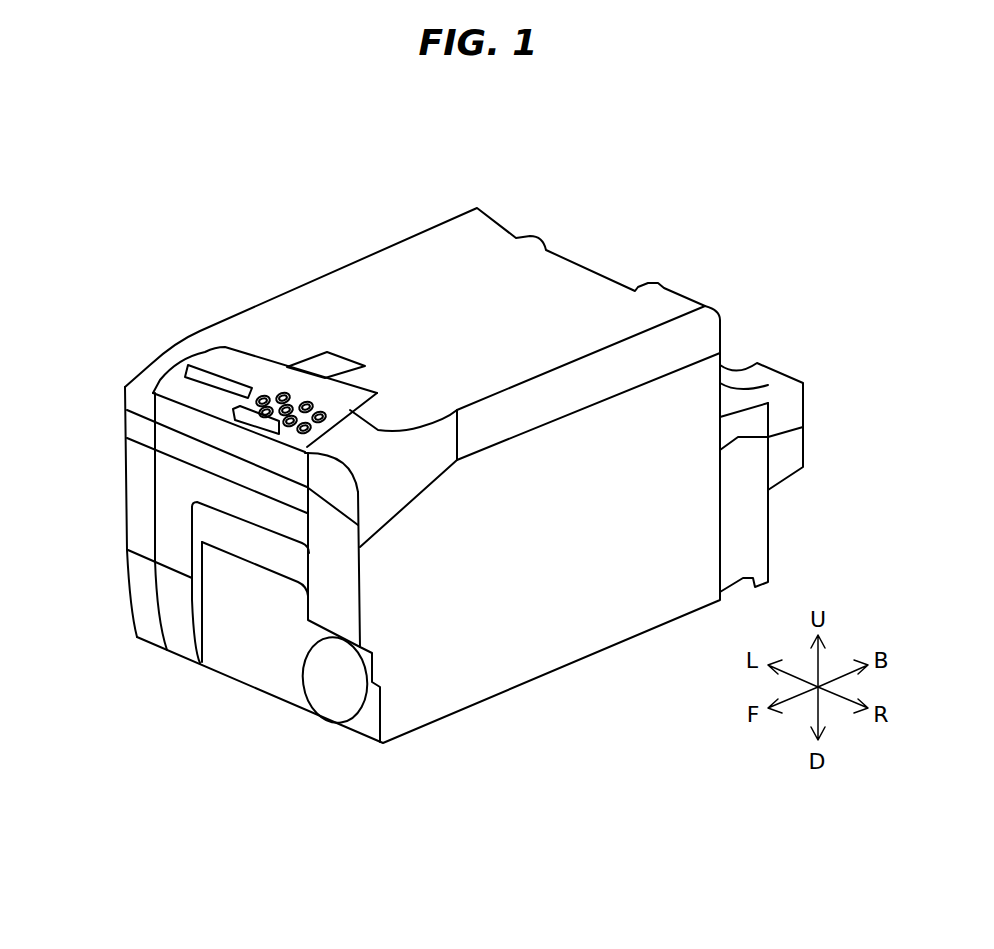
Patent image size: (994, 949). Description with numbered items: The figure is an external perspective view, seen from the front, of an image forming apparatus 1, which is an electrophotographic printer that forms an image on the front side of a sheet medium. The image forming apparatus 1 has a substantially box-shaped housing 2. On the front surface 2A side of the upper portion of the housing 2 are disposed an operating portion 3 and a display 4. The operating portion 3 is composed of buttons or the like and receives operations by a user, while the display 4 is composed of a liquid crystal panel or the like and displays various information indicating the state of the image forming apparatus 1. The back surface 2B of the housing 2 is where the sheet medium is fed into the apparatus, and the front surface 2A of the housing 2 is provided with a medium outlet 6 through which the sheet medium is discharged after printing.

The image forming apparatus 1 is at (138, 211).
The housing 2 is at (374, 286).
The front surface 2A is at (143, 593).
The back surface 2B is at (784, 364).
The operating portion 3 is at (282, 390).
The display 4 is at (203, 376).
The medium outlet 6 is at (217, 528).